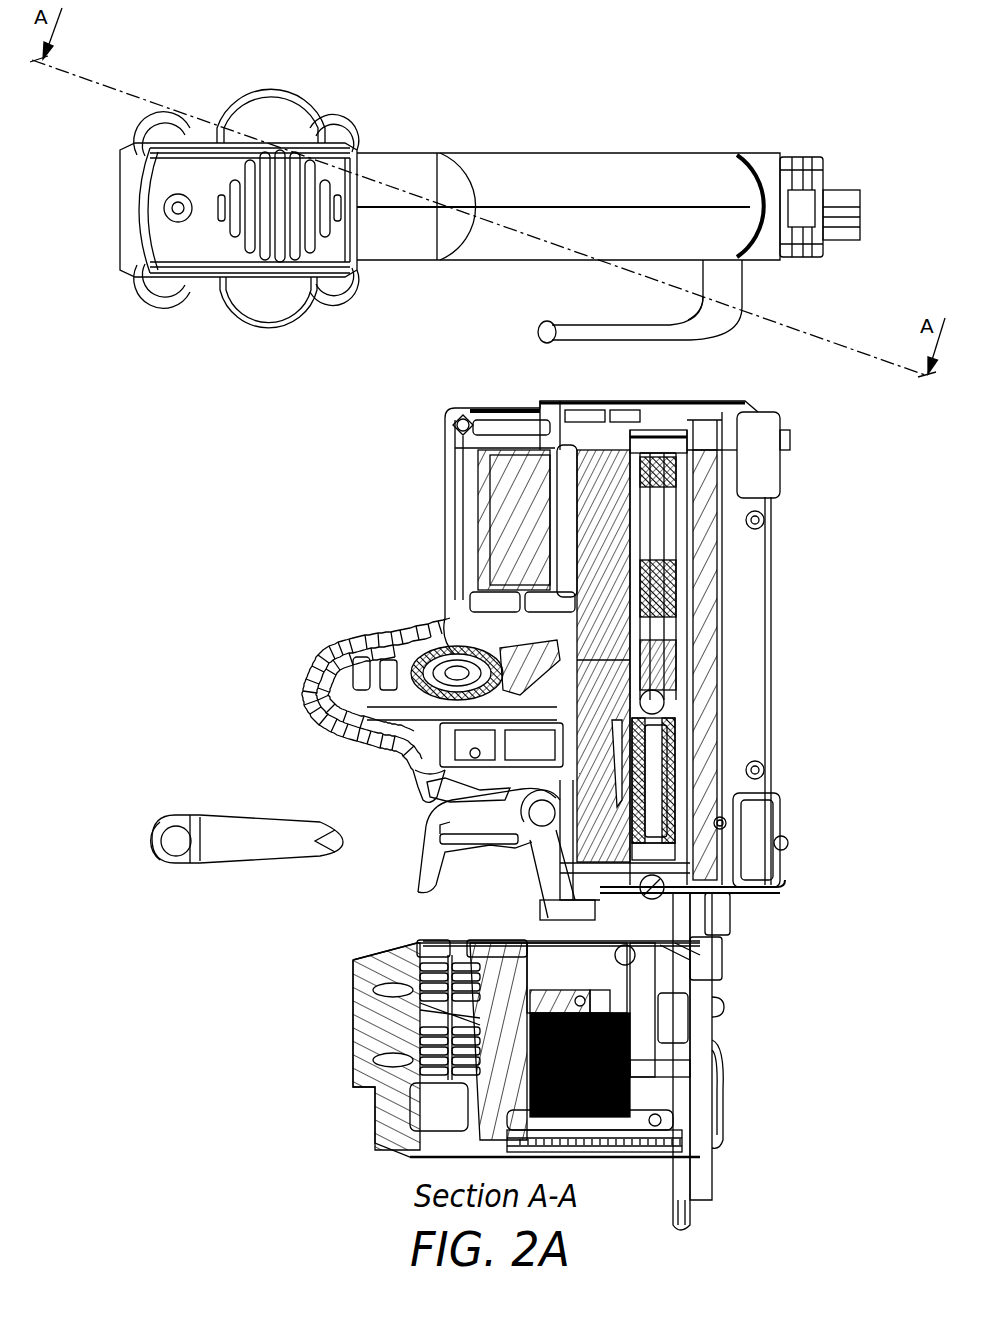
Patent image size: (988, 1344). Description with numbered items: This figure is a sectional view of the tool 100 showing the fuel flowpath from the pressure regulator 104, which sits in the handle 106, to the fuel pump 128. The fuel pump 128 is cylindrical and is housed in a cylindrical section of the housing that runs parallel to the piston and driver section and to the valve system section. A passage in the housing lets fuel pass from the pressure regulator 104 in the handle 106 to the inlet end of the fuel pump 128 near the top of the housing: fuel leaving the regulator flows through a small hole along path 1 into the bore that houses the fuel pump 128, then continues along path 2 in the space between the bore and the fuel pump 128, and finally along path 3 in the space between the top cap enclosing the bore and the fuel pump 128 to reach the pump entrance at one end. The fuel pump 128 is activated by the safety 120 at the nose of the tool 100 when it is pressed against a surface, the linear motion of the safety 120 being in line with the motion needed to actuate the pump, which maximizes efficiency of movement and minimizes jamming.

The tool 100 is at (808, 385).
The handle 106 is at (625, 130).
The pressure regulator 104 is at (440, 656).
The fuel pump 128 is at (683, 569).
The safety 120 is at (686, 1226).
The path 1 is at (603, 640).
The path 2 is at (603, 656).
The path 3 is at (656, 430).